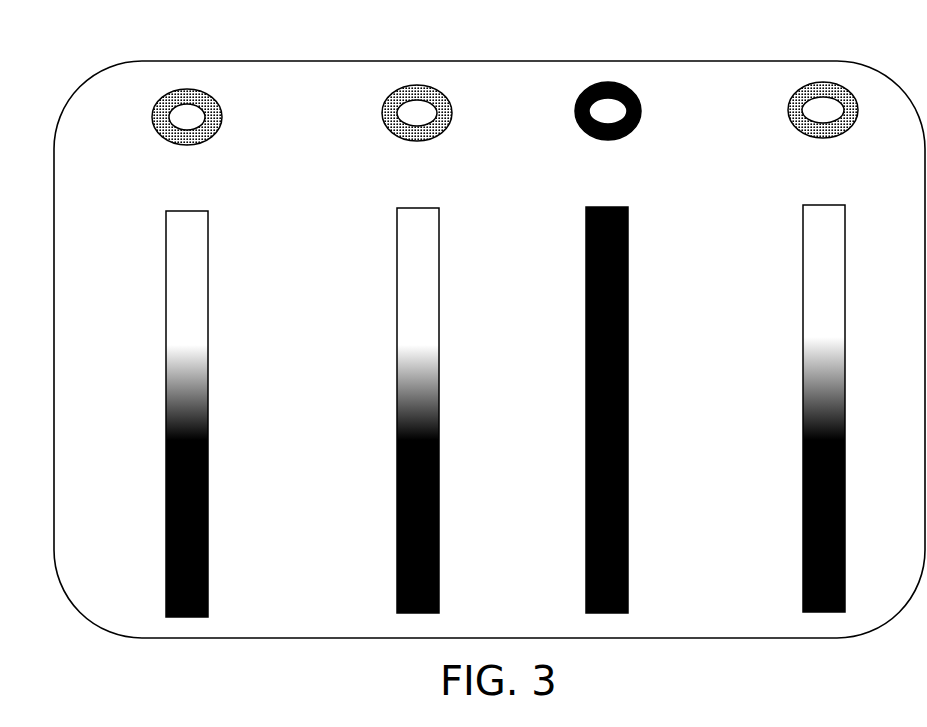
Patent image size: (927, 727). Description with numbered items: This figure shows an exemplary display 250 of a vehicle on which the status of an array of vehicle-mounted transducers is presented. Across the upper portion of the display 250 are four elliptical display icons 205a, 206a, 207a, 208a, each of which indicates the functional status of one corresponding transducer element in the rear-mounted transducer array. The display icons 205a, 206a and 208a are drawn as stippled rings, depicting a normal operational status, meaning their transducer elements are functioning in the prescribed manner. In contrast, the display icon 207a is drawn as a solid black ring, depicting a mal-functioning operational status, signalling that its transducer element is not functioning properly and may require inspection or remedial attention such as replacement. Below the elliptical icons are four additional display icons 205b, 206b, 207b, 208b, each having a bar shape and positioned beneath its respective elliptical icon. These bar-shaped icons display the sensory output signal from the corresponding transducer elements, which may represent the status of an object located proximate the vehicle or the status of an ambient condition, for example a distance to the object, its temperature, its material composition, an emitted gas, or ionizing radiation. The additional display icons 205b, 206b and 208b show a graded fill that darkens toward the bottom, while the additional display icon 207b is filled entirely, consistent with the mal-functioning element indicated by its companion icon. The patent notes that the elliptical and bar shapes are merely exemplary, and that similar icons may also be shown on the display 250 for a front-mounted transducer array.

The display 250 is at (802, 61).
The display icon 205a is at (152, 117).
The display icon 206a is at (382, 113).
The display icon 207a is at (575, 111).
The display icon 208a is at (788, 110).
The additional display icon 205b is at (166, 306).
The additional display icon 206b is at (397, 303).
The additional display icon 207b is at (586, 302).
The additional display icon 208b is at (803, 300).